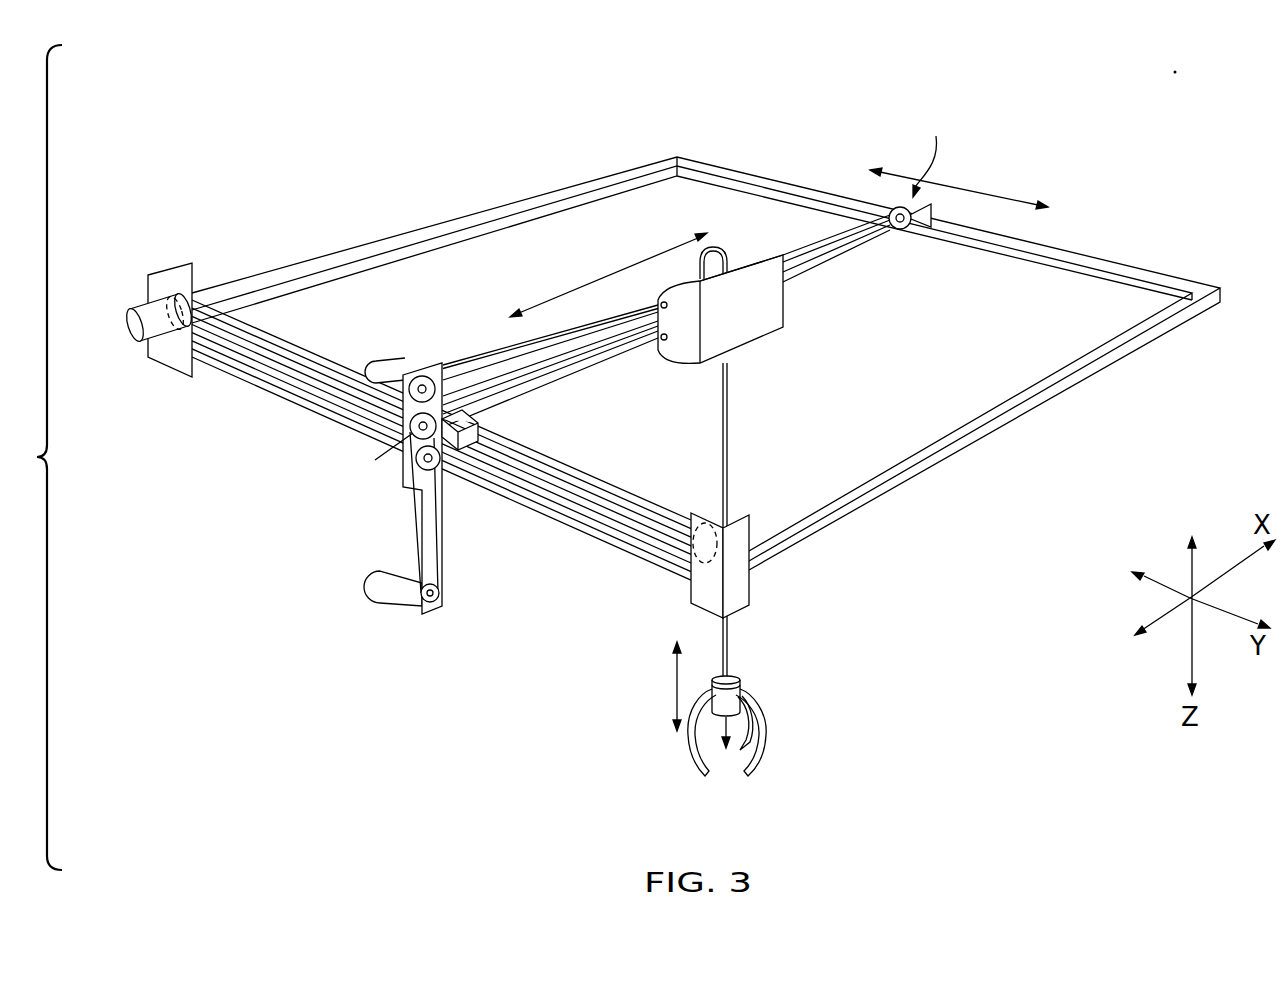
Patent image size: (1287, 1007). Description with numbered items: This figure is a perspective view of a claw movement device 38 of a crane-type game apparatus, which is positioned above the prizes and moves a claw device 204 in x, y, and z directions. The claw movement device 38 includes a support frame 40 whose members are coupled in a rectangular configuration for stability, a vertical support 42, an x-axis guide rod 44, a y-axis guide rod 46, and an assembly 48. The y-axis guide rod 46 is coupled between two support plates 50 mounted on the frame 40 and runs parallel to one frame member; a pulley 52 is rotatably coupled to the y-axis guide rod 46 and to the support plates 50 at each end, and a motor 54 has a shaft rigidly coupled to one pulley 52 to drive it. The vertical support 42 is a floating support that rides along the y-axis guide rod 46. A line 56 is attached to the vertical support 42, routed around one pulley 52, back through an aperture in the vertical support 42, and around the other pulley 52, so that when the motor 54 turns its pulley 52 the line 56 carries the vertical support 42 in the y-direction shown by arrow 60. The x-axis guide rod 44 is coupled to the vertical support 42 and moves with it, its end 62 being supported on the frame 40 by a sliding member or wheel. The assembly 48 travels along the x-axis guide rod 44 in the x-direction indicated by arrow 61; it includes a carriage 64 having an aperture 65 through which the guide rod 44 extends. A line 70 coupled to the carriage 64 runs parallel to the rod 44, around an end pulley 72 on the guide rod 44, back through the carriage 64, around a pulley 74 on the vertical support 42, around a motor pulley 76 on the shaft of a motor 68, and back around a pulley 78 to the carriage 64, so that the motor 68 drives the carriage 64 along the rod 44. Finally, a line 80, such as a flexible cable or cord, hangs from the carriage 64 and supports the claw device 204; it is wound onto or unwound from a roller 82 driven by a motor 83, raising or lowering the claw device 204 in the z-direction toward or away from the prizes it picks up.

The claw movement device 38 is at (706, 326).
The support frame 40 is at (331, 263).
The vertical support 42 is at (444, 567).
The x-axis guide rod 44 is at (812, 258).
The y-axis guide rod 46 is at (272, 358).
The assembly 48 is at (772, 350).
The support plates 50 is at (172, 266).
The pulley 52 is at (148, 293).
The motor 54 is at (132, 330).
The line 56 is at (293, 343).
The arrow 60 is at (977, 190).
The arrow 61 is at (597, 278).
The end 62 is at (930, 151).
The carriage 64 is at (742, 262).
The aperture 65 is at (668, 330).
The motor 68 is at (385, 593).
The line 70 is at (818, 240).
The end pulley 72 is at (908, 232).
The pulley 74 is at (443, 468).
The motor pulley 76 is at (430, 606).
The pulley 78 is at (414, 428).
The line 80 is at (490, 350).
The roller 82 is at (421, 377).
The motor 83 is at (386, 363).
The claw device 204 is at (770, 712).